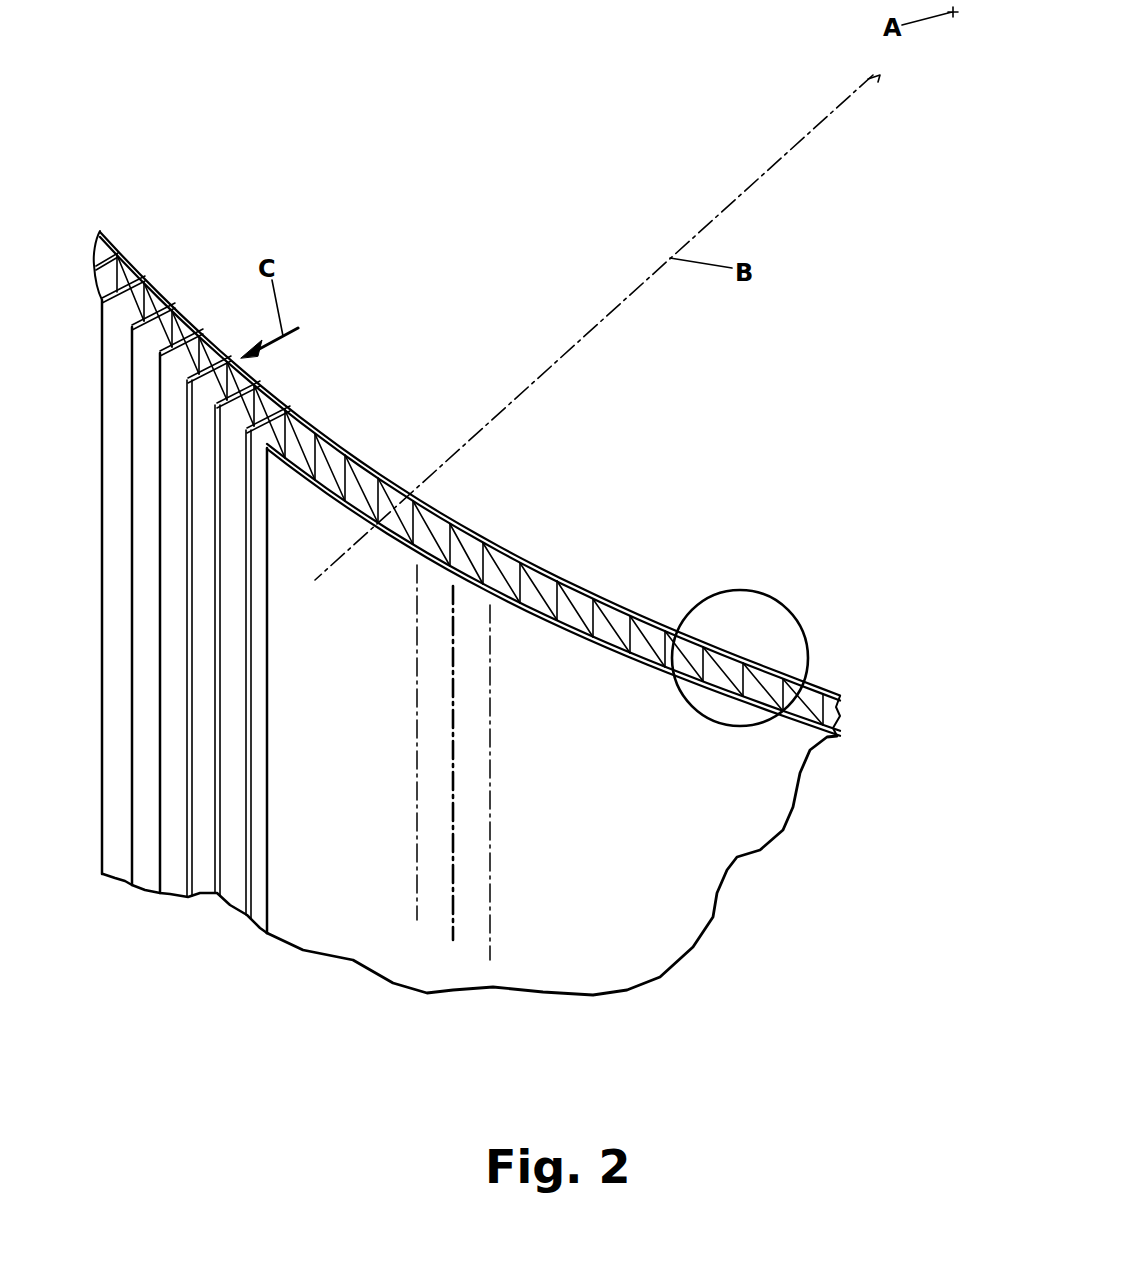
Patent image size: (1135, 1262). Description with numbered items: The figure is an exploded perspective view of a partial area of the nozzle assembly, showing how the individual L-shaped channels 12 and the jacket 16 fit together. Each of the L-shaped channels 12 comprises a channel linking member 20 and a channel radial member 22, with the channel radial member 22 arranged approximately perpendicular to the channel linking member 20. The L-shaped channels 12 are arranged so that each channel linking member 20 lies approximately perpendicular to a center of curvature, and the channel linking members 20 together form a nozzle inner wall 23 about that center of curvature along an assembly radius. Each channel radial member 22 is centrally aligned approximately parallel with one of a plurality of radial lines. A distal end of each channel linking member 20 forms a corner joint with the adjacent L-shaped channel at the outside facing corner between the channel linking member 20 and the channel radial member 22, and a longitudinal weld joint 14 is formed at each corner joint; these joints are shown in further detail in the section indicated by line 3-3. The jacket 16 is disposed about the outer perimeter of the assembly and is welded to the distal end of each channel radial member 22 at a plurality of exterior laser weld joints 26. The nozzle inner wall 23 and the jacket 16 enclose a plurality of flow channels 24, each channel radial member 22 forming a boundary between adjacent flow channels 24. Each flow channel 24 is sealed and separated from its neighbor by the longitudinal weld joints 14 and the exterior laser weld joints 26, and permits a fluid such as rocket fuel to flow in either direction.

The L-shaped channel 12 is at (392, 480).
The longitudinal weld joint 14 is at (704, 642).
The jacket 16 is at (313, 910).
The channel linking member 20 is at (343, 438).
The channel radial member 22 is at (125, 398).
The nozzle inner wall 23 is at (264, 414).
The flow channel 24 is at (527, 587).
The exterior laser weld joint 26 is at (490, 915).
The section line 3-3 is at (755, 592).